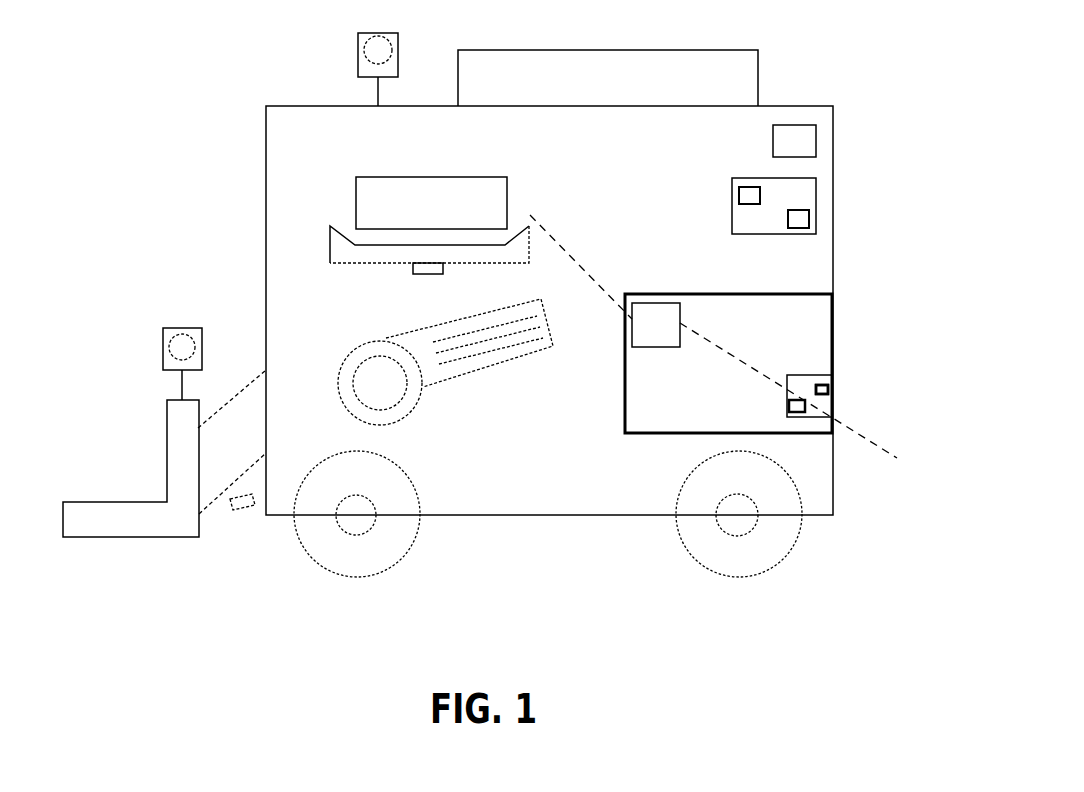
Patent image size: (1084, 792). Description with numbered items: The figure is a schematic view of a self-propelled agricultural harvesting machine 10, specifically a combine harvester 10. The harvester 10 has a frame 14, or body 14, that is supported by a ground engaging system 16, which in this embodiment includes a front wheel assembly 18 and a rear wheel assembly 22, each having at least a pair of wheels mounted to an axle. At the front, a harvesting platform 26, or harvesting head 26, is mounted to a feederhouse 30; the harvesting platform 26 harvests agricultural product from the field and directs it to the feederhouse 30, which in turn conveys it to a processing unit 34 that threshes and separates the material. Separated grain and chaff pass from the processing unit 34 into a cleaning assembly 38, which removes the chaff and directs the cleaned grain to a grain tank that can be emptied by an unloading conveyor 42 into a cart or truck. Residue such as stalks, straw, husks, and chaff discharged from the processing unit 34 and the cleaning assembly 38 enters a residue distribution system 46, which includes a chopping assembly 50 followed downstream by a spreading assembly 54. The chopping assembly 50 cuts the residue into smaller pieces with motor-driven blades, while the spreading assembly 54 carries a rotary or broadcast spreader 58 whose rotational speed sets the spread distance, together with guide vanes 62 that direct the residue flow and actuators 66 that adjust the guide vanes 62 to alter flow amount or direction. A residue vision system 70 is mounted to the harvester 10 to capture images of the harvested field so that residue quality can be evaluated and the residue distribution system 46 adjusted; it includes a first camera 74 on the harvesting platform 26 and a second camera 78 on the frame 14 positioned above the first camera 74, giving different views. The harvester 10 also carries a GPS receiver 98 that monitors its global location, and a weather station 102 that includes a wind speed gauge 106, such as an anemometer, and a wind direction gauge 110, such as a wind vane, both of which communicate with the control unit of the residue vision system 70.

The self-propelled agricultural harvesting machine 10 is at (141, 60).
The frame 14 is at (803, 106).
The ground engaging system 16 is at (320, 593).
The front wheel assembly 18 is at (395, 547).
The rear wheel assembly 22 is at (780, 541).
The harvesting platform 26 is at (93, 502).
The feederhouse 30 is at (240, 392).
The processing unit 34 is at (375, 177).
The cleaning assembly 38 is at (328, 242).
The unloading conveyor 42 is at (353, 353).
The residue distribution system 46 is at (788, 294).
The chopping assembly 50 is at (627, 342).
The spreading assembly 54 is at (817, 375).
The spreader 58 is at (789, 408).
The guide vanes 62 is at (830, 388).
The actuators 66 is at (822, 389).
The residue vision system 70 is at (330, 79).
The first camera 74 is at (163, 347).
The second camera 78 is at (358, 47).
The GPS receiver 98 is at (816, 133).
The weather station 102 is at (816, 193).
The wind speed gauge 106 is at (809, 218).
The wind direction gauge 110 is at (739, 195).